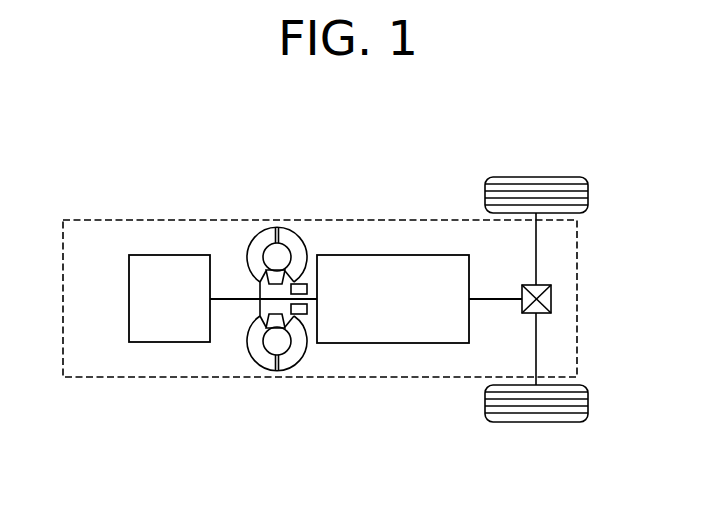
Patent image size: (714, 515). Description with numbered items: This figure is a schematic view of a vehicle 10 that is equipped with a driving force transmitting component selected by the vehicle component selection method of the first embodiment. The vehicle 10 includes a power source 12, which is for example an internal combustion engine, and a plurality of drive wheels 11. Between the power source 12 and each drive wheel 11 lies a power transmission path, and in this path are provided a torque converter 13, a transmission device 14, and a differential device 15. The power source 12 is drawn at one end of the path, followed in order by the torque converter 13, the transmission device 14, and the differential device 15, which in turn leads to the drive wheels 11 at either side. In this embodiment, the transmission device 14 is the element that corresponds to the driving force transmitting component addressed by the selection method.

The vehicle 10 is at (230, 176).
The drive wheels 11 is at (556, 178).
The power source 12 is at (128, 283).
The torque converter 13 is at (303, 238).
The transmission device 14 is at (438, 344).
The differential device 15 is at (552, 300).